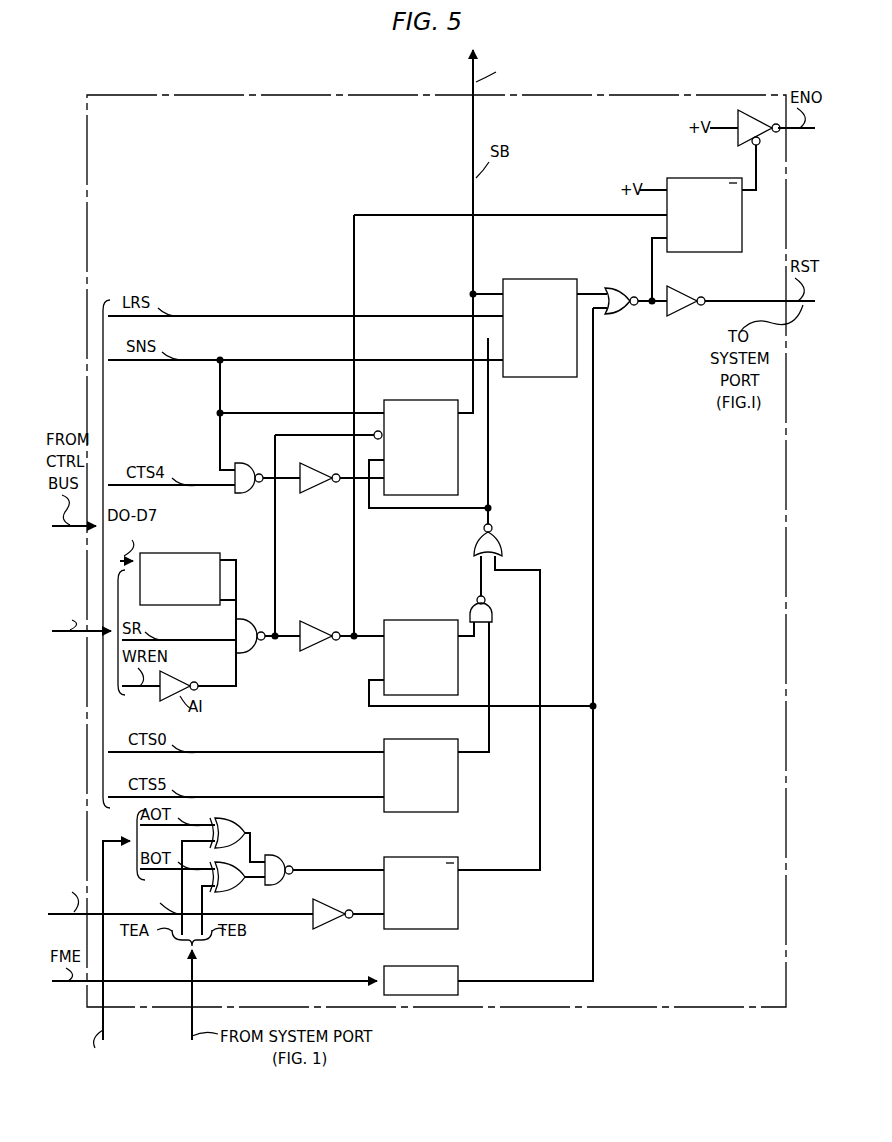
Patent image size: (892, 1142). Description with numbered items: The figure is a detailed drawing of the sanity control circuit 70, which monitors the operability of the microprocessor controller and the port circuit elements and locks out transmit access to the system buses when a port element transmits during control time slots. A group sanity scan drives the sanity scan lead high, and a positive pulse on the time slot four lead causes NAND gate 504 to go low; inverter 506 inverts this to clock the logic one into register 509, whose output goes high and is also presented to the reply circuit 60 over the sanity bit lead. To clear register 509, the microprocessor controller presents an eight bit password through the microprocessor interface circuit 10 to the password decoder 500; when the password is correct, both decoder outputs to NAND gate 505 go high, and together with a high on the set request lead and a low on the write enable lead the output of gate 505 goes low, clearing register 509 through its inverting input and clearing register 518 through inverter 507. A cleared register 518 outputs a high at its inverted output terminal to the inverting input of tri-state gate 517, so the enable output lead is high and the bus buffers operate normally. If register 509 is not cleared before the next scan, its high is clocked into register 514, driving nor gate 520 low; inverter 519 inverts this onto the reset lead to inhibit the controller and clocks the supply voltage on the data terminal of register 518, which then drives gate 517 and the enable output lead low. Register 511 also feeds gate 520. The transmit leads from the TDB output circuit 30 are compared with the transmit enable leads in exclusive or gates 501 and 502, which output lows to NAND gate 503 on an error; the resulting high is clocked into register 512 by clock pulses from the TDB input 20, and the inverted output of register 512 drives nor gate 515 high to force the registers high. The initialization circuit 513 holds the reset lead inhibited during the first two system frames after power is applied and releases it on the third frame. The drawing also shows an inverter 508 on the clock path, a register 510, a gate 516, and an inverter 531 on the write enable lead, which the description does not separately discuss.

The sanity control circuit 70 is at (175, 95).
The password decoder 500 is at (176, 553).
The exclusive or gate 501 is at (240, 822).
The exclusive or gate 502 is at (228, 891).
The NAND gate 503 is at (280, 856).
The NAND gate 504 is at (246, 462).
The NAND gate 505 is at (252, 618).
The inverter 506 is at (312, 466).
The inverter 507 is at (314, 621).
The inverter 508 is at (332, 900).
The register 509 is at (432, 399).
The flip-flop 510 is at (432, 619).
The register 511 is at (432, 738).
The register 512 is at (432, 856).
The initialization circuit 513 is at (432, 965).
The register 514 is at (551, 278).
The nor gate 515 is at (503, 544).
The NAND gate 516 is at (494, 604).
The tri-state gate 517 is at (736, 118).
The register 518 is at (712, 177).
The inverter 519 is at (688, 292).
The nor gate 520 is at (614, 287).
The inverter 531 is at (182, 671).
The microprocessor interface circuit 10 is at (74, 584).
The TDB input 20 is at (180, 812).
The TDB output circuit 30 is at (102, 974).
The reply circuit 60 is at (561, 73).